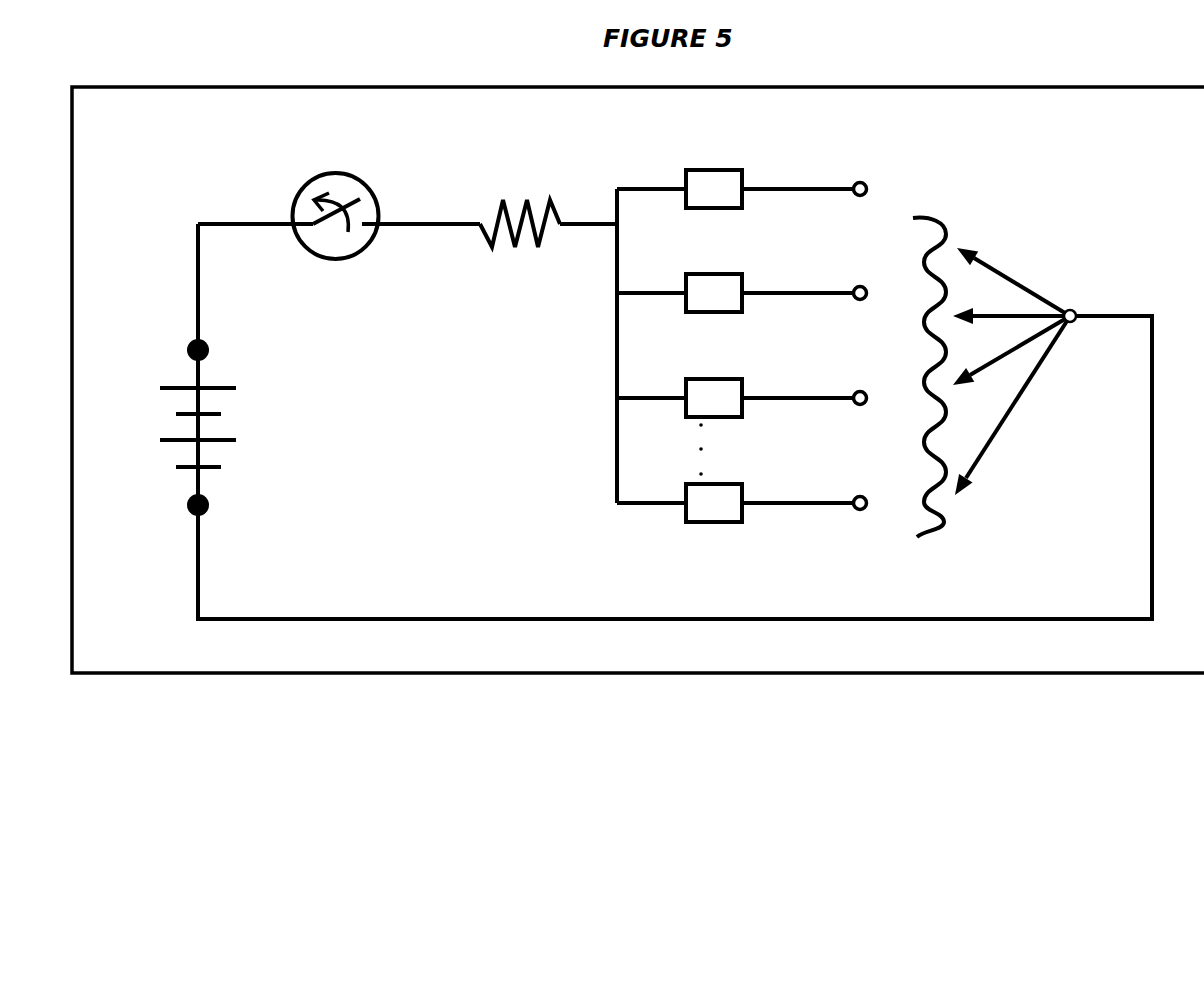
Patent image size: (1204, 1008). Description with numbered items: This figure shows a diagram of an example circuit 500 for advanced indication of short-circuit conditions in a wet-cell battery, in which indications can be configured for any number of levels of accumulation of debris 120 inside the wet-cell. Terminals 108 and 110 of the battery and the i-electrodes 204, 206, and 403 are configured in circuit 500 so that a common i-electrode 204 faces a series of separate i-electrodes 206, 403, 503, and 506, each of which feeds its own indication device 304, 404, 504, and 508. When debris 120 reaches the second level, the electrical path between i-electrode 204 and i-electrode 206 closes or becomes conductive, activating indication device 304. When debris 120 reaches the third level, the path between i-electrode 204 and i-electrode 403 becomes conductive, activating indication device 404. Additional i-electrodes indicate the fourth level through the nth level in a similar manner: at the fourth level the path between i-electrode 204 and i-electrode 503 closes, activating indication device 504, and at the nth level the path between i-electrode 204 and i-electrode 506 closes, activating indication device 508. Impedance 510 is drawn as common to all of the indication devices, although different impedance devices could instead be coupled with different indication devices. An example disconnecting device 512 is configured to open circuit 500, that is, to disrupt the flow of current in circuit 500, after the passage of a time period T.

The circuit 500 is at (638, 380).
The disconnecting device 512 is at (298, 202).
The impedance 510 is at (502, 204).
The indication device 304 is at (714, 189).
The indication device 404 is at (714, 293).
The indication device 504 is at (714, 398).
The indication device 508 is at (714, 503).
The i-electrode 206 is at (862, 197).
The i-electrode 403 is at (862, 301).
The i-electrode 503 is at (862, 406).
The i-electrode 506 is at (860, 511).
The debris 120 is at (936, 222).
The i-electrode 204 is at (1078, 311).
The terminal 108 is at (208, 346).
The terminal 110 is at (208, 501).